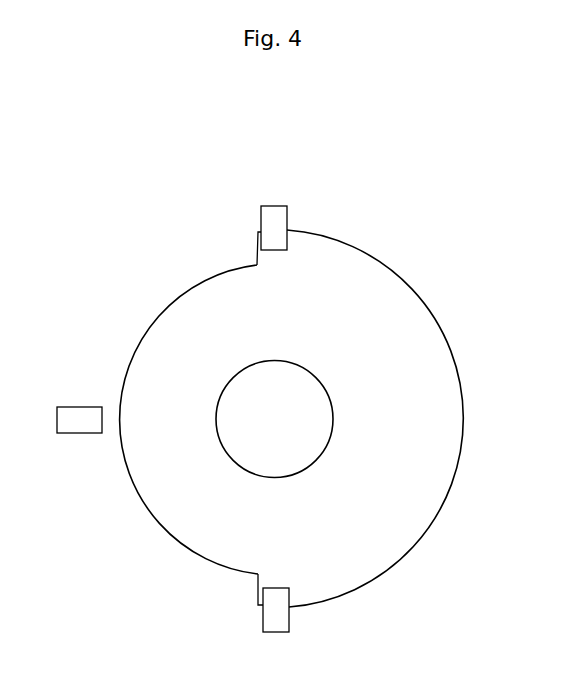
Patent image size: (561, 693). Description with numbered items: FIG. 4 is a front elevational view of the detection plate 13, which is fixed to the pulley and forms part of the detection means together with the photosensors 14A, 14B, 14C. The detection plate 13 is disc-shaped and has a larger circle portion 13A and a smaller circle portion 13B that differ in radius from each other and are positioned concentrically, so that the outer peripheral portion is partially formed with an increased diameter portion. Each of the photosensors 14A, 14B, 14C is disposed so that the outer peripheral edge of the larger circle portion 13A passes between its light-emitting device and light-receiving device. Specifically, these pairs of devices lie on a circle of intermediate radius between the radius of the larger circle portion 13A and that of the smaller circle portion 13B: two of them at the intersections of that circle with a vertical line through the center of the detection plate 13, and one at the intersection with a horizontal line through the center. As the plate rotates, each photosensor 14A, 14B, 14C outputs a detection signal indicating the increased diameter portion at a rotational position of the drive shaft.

The detection plate 13 is at (303, 418).
The larger circle portion 13A is at (441, 396).
The smaller circle portion 13B is at (170, 515).
The photosensor 14A is at (287, 213).
The photosensor 14B is at (289, 620).
The photosensor 14C is at (64, 407).